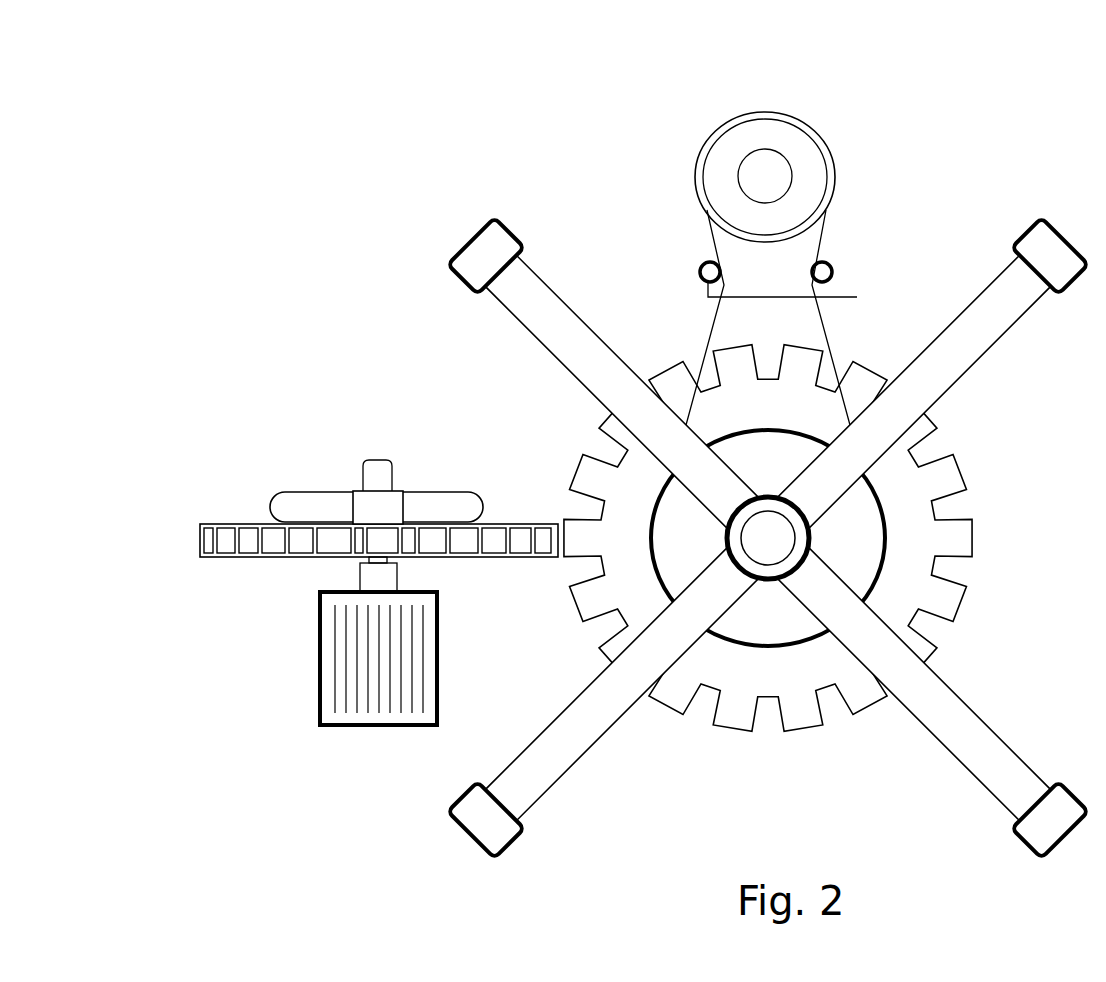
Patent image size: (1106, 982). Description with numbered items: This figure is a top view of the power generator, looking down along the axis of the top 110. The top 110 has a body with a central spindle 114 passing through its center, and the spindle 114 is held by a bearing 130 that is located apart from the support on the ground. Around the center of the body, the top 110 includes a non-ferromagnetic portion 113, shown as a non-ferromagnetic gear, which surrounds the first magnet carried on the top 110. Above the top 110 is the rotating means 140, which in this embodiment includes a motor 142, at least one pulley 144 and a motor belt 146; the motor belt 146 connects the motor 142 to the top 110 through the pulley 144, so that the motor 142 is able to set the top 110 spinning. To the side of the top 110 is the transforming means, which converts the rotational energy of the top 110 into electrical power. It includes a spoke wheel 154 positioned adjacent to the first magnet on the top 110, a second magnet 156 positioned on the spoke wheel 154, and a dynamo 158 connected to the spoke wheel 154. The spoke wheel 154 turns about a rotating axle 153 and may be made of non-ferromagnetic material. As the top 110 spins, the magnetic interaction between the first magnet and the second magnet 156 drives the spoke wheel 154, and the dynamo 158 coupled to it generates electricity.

The top 110 is at (665, 527).
The non-ferromagnetic portion 113 is at (591, 486).
The spindle 114 is at (768, 538).
The bearing 130 is at (812, 528).
The rotating means 140 is at (800, 231).
The motor 142 is at (763, 111).
The pulley 144 is at (857, 272).
The motor belt 146 is at (872, 185).
The rotating axle 153 is at (376, 465).
The spoke wheel 154 is at (350, 495).
The second magnet 156 is at (227, 535).
The dynamo 158 is at (320, 613).